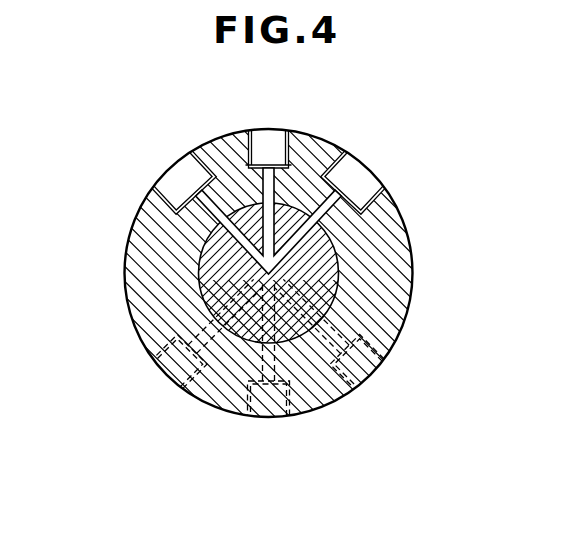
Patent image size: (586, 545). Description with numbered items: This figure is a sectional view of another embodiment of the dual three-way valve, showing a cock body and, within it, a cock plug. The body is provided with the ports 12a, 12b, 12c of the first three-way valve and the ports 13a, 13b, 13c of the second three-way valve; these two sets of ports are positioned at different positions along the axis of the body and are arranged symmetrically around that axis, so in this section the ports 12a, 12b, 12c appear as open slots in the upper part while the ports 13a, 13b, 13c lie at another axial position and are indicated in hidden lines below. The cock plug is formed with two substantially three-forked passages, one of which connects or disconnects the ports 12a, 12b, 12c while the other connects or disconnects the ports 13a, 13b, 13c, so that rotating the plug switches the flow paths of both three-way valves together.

The port 12a is at (270, 135).
The port 12b is at (183, 175).
The port 12c is at (362, 180).
The port 13a is at (256, 417).
The port 13b is at (168, 368).
The port 13c is at (355, 372).